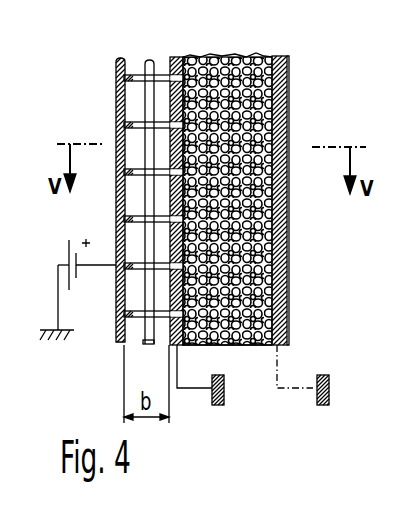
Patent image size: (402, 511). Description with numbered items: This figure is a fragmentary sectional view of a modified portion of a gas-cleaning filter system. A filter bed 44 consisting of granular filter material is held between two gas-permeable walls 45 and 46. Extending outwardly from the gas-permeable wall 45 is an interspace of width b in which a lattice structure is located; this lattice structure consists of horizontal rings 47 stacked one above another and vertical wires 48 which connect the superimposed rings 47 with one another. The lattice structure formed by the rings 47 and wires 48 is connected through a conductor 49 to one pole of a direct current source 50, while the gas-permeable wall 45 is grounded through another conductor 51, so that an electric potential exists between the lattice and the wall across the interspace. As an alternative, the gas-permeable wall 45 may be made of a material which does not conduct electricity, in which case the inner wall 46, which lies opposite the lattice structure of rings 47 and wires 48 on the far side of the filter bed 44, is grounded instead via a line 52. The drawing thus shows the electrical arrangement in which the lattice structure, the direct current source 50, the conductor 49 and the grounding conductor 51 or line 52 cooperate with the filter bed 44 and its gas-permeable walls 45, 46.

The filter bed 44 is at (289, 80).
The gas-permeable wall 45 is at (184, 57).
The gas-permeable wall 46 is at (288, 237).
The horizontal rings 47 is at (117, 66).
The vertical wires 48 is at (116, 109).
The conductor 49 is at (103, 263).
The direct current source 50 is at (76, 279).
The conductor 51 is at (178, 367).
The line 52 is at (279, 390).